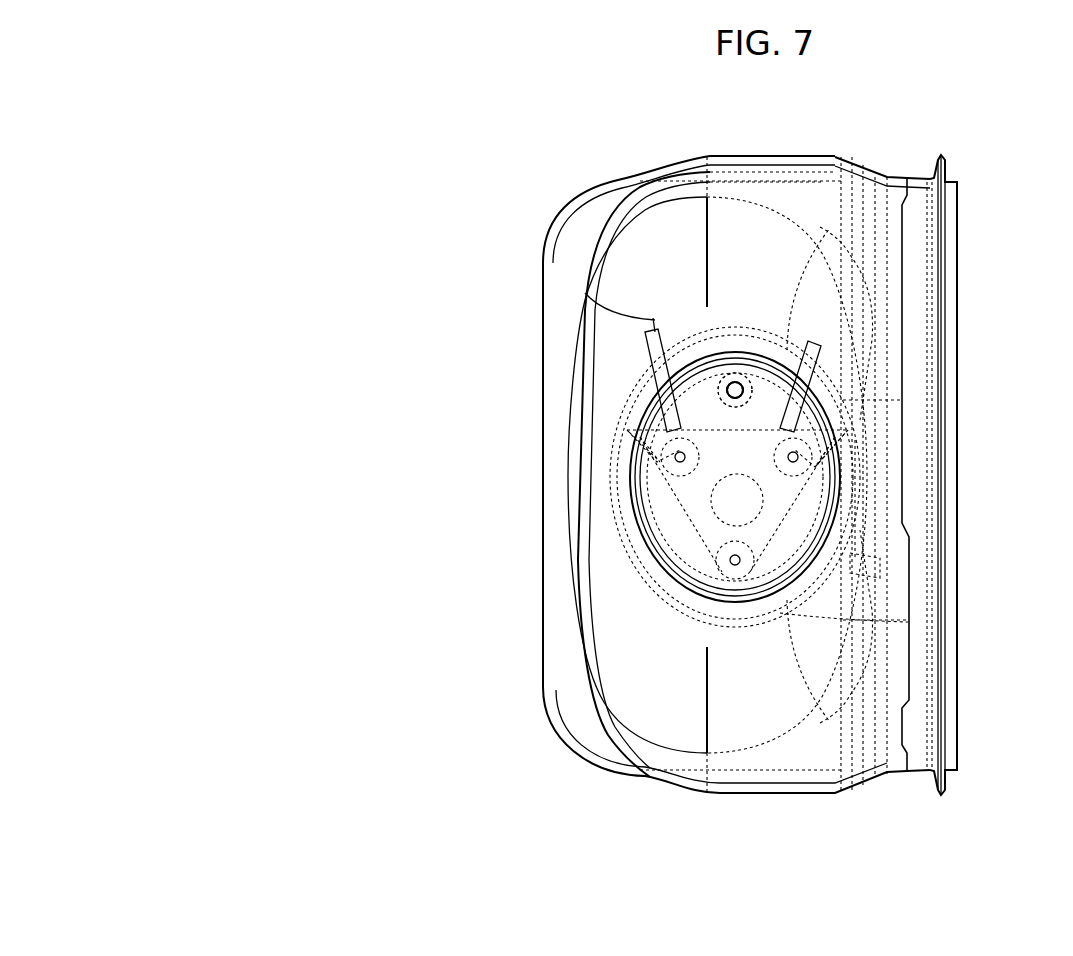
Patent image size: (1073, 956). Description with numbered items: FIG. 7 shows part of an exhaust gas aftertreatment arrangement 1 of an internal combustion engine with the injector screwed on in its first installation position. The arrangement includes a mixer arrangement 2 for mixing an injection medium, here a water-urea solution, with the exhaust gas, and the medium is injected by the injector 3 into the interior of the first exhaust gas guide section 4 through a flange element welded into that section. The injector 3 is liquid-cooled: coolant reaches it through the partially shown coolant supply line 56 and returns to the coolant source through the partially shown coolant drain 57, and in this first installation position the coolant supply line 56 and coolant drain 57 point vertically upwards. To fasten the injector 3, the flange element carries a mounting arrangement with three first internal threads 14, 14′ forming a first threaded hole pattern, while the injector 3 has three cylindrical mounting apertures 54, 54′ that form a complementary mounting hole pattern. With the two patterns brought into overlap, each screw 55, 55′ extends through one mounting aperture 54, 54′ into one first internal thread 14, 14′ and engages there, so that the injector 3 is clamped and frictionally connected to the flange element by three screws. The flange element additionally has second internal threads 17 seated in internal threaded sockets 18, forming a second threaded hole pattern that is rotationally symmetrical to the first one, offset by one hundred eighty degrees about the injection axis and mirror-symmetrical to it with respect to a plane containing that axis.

The exhaust gas aftertreatment arrangement 1 is at (300, 213).
The mixer arrangement 2 is at (978, 210).
The injector 3 is at (655, 598).
The first exhaust gas guide section 4 is at (698, 157).
The first internal thread 14 is at (738, 590).
The first internal thread 14′ is at (655, 480).
The second internal thread 17 is at (708, 305).
The internal threaded socket 18 is at (735, 390).
The mounting aperture 54 is at (718, 578).
The mounting aperture 54′ is at (657, 462).
The screw 55 is at (908, 622).
The screw 55′ is at (652, 400).
The coolant supply line 56 is at (625, 362).
The coolant drain 57 is at (835, 423).